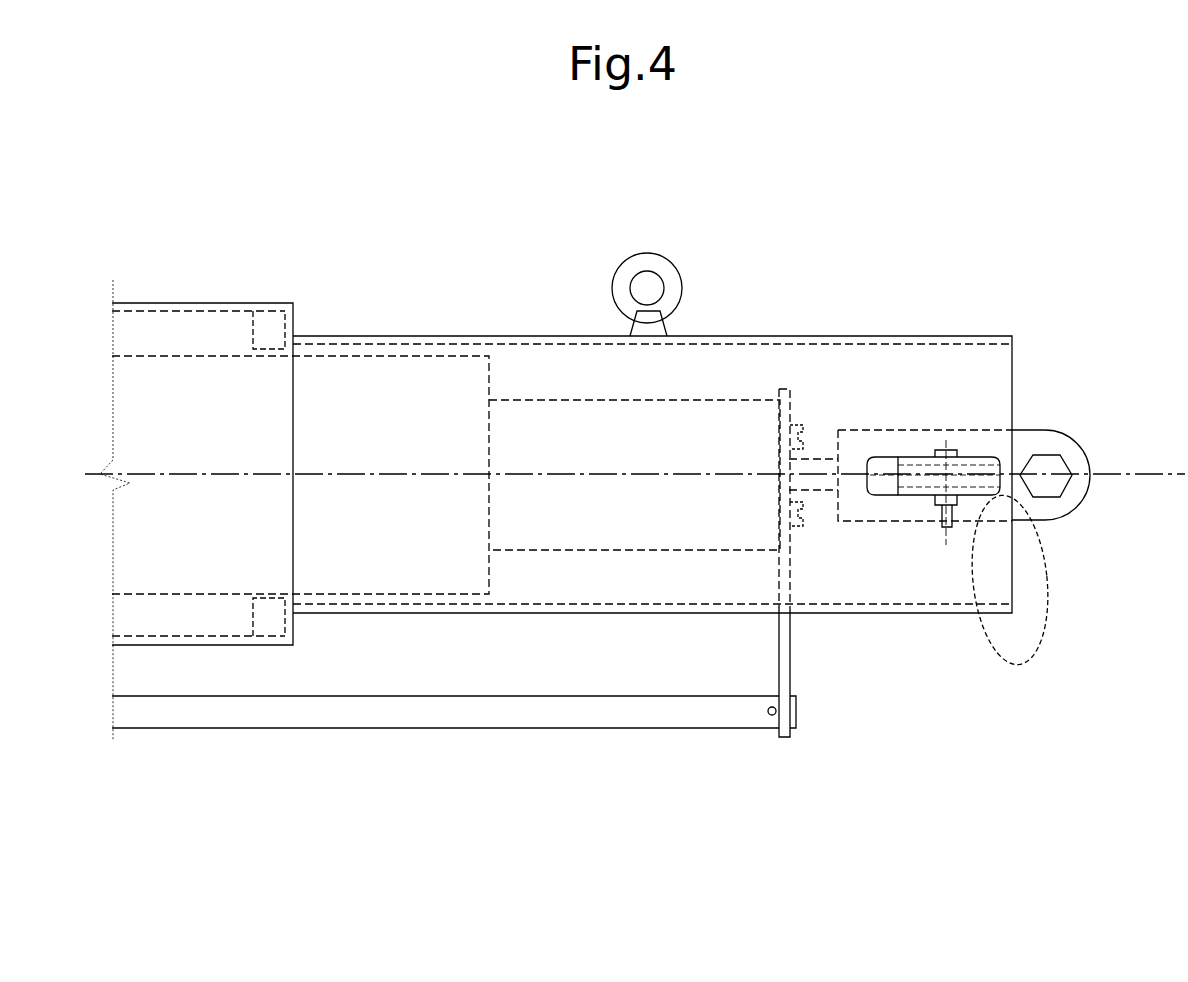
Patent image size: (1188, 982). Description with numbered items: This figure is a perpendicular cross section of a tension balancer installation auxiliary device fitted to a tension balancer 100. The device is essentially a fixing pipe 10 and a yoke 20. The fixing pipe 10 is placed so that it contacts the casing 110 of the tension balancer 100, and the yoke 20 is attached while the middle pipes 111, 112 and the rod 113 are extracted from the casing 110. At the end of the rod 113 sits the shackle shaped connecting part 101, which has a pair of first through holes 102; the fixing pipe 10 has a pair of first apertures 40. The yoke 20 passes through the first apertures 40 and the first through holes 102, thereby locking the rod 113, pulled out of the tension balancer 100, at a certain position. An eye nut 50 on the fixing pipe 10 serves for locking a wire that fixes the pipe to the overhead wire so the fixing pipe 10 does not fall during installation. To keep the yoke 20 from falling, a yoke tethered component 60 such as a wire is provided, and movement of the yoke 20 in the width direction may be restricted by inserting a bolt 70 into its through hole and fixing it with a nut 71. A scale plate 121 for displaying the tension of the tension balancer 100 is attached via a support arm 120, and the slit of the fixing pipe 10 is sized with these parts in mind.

The tension balancer 100 is at (174, 278).
The fixing pipe 10 is at (426, 336).
The casing 110 is at (180, 647).
The middle pipe 111 is at (410, 594).
The middle pipe 112 is at (620, 550).
The rod 113 is at (815, 491).
The support arm 120 is at (265, 713).
The scale plate 121 is at (782, 652).
The eye nut 50 is at (646, 254).
The shackle shaped connecting part 101 is at (1068, 452).
The first through hole 102 is at (885, 445).
The first aperture 40 is at (917, 450).
The bolt 70 is at (951, 452).
The nut 71 is at (952, 505).
The yoke 20 is at (905, 498).
The yoke tethered component 60 is at (1037, 637).